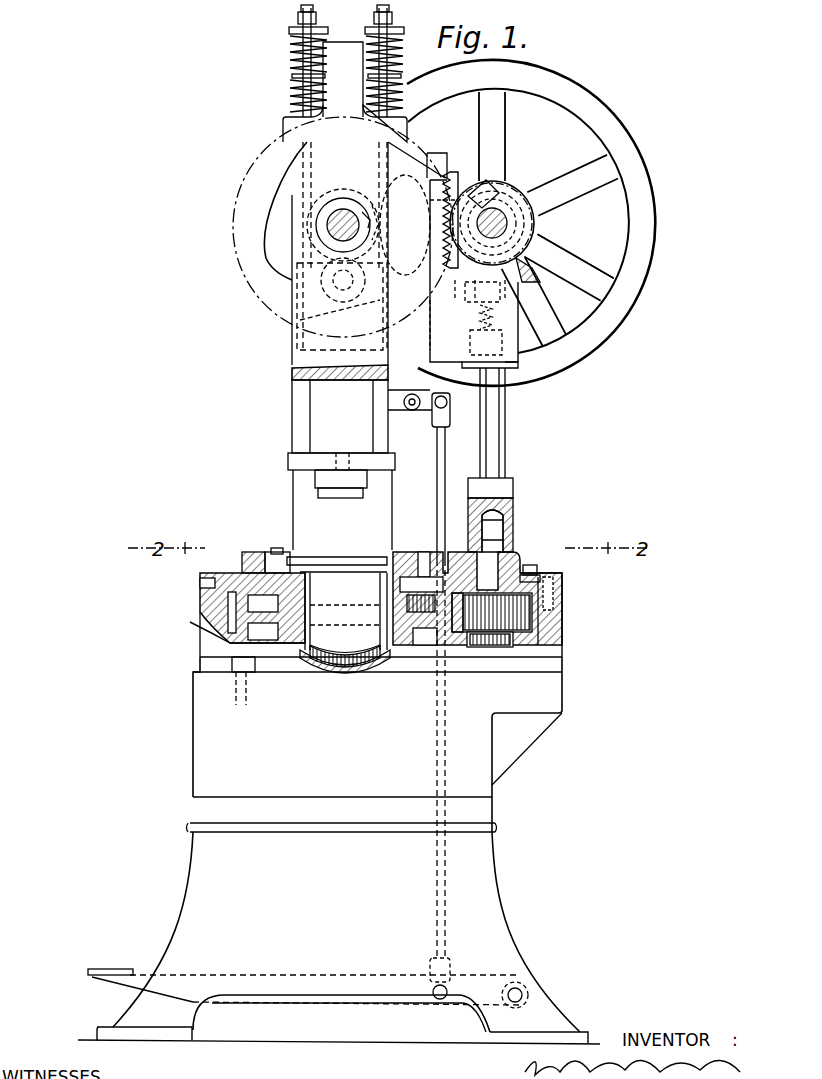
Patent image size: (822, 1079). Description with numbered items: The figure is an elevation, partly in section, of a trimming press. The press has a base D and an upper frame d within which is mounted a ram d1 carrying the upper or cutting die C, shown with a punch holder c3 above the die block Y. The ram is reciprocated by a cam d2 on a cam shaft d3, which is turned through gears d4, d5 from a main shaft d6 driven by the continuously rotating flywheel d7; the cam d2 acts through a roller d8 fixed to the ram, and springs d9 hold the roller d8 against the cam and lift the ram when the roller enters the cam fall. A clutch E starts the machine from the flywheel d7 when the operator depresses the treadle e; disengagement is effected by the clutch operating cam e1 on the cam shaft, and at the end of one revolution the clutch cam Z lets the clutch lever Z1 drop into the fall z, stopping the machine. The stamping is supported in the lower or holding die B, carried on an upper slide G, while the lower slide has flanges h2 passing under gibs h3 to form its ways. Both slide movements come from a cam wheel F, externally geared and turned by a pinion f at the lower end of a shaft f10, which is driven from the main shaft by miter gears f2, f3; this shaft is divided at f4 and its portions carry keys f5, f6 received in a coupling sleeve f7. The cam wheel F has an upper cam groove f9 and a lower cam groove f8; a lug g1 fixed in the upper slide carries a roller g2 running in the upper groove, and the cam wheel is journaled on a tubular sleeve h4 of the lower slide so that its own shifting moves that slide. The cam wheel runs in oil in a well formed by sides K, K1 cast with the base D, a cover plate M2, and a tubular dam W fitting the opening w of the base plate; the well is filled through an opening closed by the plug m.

The flywheel d7 is at (628, 284).
The gear d5 is at (495, 185).
The main shaft d6 is at (537, 223).
The miter gear f2 is at (548, 232).
The miter gear f3 is at (527, 288).
The springs d9 is at (385, 95).
The upper frame d is at (292, 222).
The gear d4 is at (262, 168).
The cam shaft d3 is at (360, 212).
The clutch cam Z is at (335, 230).
The clutch operating cam e1 is at (330, 210).
The fall z is at (369, 204).
The clutch lever Z1 is at (378, 218).
The cam d2 is at (268, 262).
The roller d8 is at (310, 318).
The clutch E is at (474, 270).
The shaft f10 is at (506, 428).
The coupling sleeve f7 is at (513, 490).
The key f6 is at (513, 504).
The division of the shaft f4 is at (503, 517).
The key f5 is at (503, 534).
The ram d1 is at (340, 416).
The cutting die C is at (360, 494).
The punch holder c3 is at (367, 484).
The die block Y is at (340, 556).
The projection or lug g1 is at (433, 545).
The holding die B is at (318, 557).
The gibs h3 is at (242, 565).
The upper cam groove f9 is at (272, 550).
The upper slide G is at (245, 550).
The flanges h2 is at (248, 600).
The cam wheel F is at (245, 628).
The side K is at (205, 650).
The lower cam groove f8 is at (265, 674).
The tubular dam W is at (340, 668).
The opening w is at (370, 676).
The tubular sleeve h4 is at (305, 668).
The roller g2 is at (420, 612).
The pinion f is at (530, 610).
The side K1 is at (548, 632).
The plug m is at (538, 568).
The cover plate M2 is at (560, 605).
The base D is at (339, 802).
The treadle e is at (115, 980).